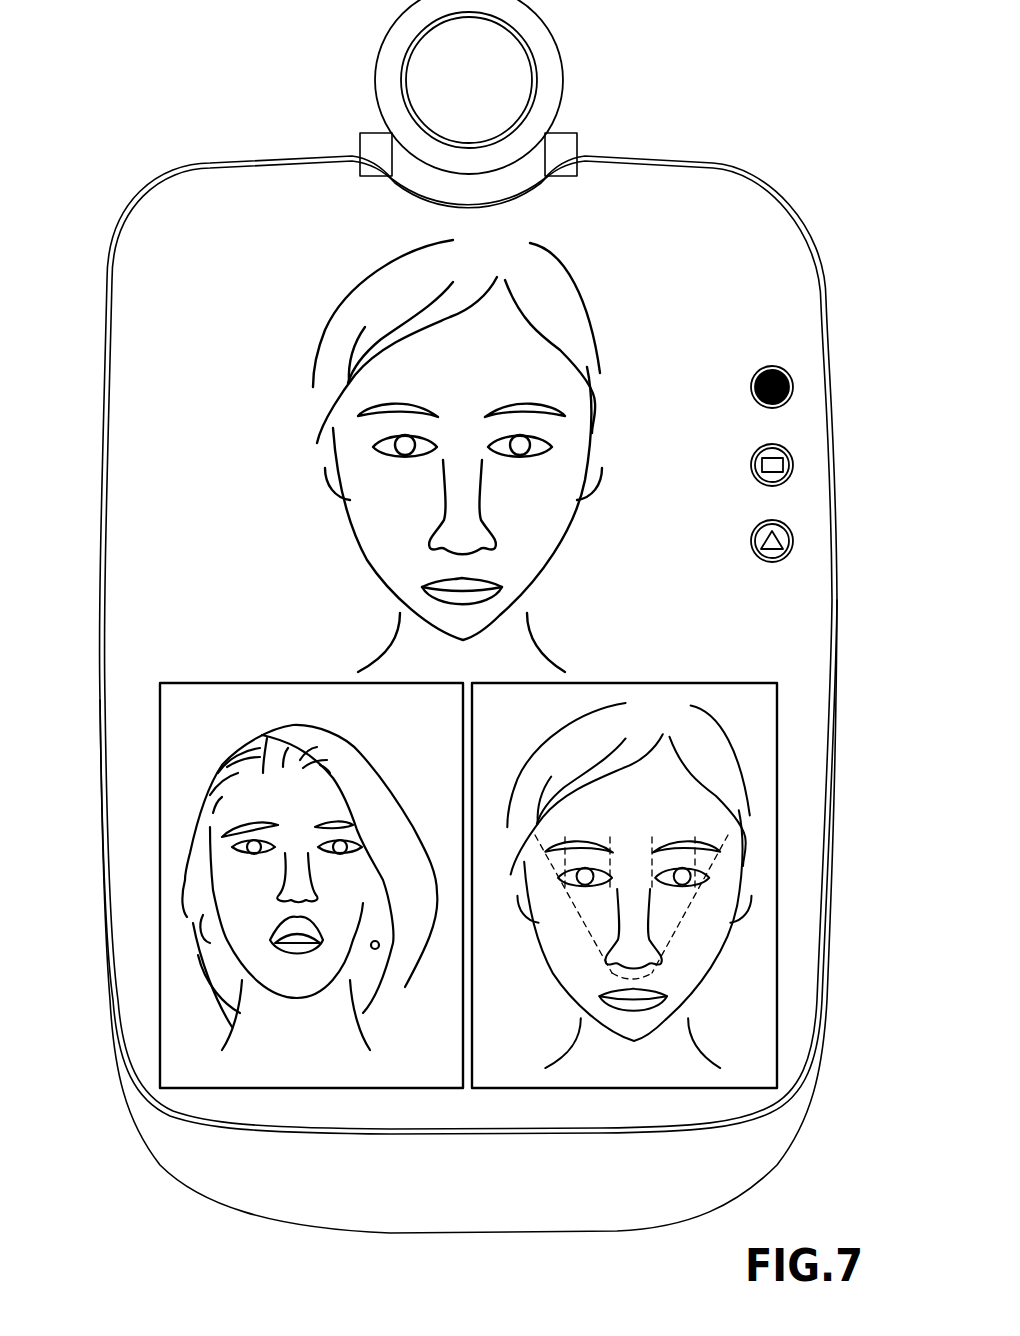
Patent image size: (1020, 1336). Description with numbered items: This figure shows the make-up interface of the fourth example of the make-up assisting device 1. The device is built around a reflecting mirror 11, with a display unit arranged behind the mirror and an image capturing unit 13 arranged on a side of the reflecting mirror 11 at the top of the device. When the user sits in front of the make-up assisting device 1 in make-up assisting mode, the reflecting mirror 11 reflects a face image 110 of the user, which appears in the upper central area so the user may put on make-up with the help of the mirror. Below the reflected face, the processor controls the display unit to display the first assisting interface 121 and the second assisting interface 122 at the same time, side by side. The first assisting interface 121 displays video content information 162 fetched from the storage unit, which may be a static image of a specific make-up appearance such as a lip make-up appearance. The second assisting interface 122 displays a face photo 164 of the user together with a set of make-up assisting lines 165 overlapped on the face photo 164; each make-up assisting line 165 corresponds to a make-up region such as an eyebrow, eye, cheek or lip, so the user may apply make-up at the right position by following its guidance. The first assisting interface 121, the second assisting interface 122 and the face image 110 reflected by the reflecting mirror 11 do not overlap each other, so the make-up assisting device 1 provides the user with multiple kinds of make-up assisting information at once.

The make-up assisting device 1 is at (727, 159).
The reflecting mirror 11 is at (276, 205).
The image capturing unit 13 is at (485, 75).
The face image 110 is at (560, 295).
The first assisting interface 121 is at (202, 722).
The second assisting interface 122 is at (738, 713).
The video content information 162 is at (195, 868).
The face photo 164 is at (725, 773).
The make-up assisting line 165 is at (692, 925).